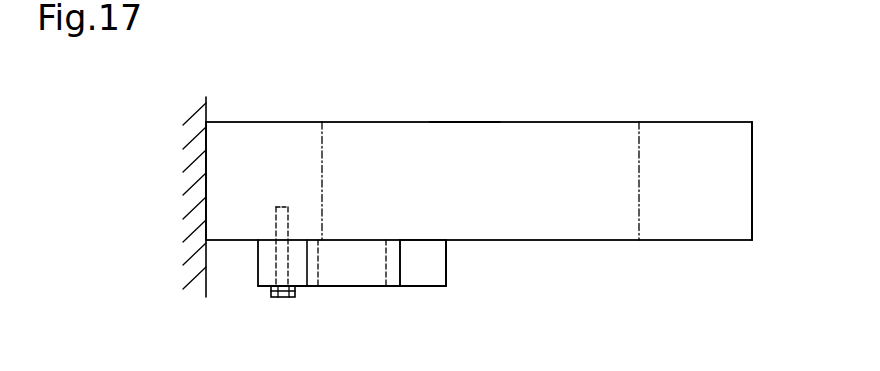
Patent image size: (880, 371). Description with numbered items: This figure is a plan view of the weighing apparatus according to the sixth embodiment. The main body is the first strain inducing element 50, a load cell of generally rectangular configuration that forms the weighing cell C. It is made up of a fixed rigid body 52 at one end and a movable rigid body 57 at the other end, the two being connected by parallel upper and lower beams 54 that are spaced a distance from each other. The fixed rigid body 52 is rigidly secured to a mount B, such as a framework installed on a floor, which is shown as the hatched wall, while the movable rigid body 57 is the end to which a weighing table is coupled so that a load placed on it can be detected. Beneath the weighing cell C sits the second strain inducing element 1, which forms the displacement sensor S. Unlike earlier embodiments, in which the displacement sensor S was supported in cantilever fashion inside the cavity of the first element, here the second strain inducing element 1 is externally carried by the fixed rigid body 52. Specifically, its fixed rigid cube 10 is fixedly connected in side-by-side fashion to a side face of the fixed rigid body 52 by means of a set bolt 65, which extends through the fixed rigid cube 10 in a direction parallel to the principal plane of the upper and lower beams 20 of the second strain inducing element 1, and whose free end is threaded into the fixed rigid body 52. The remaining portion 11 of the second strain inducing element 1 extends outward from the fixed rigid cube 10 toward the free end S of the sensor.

The first strain inducing element 50 is at (508, 122).
The fixed rigid body 52 is at (288, 135).
The upper and lower beams 54 is at (450, 138).
The movable rigid body 57 is at (663, 133).
The weighing cell C is at (708, 122).
The mount B is at (177, 280).
The fixed rigid cube 10 is at (267, 273).
The upper and lower beams 20 is at (356, 275).
The second strain inducing element 1 is at (386, 287).
The end member 11 is at (415, 282).
The displacement sensor S is at (446, 287).
The set bolt 65 is at (283, 297).